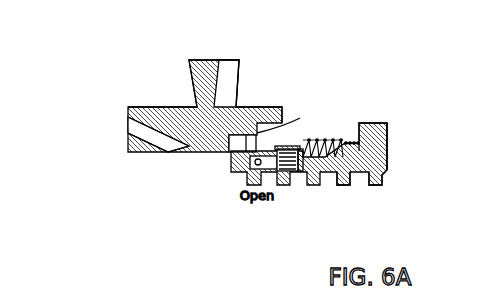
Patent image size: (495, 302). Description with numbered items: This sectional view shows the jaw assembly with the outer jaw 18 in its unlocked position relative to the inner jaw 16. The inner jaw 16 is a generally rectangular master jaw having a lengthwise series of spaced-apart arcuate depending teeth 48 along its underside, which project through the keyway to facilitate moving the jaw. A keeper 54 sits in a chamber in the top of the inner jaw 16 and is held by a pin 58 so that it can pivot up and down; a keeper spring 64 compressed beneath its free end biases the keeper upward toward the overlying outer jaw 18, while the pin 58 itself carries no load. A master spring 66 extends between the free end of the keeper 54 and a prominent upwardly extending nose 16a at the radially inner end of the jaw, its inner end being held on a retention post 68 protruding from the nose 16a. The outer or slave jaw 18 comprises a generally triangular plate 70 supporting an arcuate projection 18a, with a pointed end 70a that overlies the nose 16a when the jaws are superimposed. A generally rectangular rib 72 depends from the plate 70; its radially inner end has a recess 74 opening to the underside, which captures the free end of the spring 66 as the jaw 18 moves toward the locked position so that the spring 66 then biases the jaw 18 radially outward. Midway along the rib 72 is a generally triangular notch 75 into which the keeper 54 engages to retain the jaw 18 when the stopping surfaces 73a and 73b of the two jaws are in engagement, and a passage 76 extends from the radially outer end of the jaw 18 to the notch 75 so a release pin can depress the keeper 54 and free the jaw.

The inner jaw 16 is at (328, 166).
The nose 16a is at (388, 130).
The outer jaw 18 is at (120, 104).
The arcuate projection 18a is at (192, 62).
The depending teeth 48 is at (352, 178).
The keeper 54 is at (270, 172).
The pin 58 is at (262, 172).
The keeper spring 64 is at (303, 172).
The master spring 66 is at (328, 142).
The retention post 68 is at (390, 172).
The plate 70 is at (152, 107).
The pointed end 70a is at (283, 107).
The rib 72 is at (133, 142).
The stopping surface 73a is at (300, 118).
The stopping surface 73b is at (386, 148).
The recess 74 is at (238, 147).
The notch 75 is at (185, 143).
The passage 76 is at (143, 127).